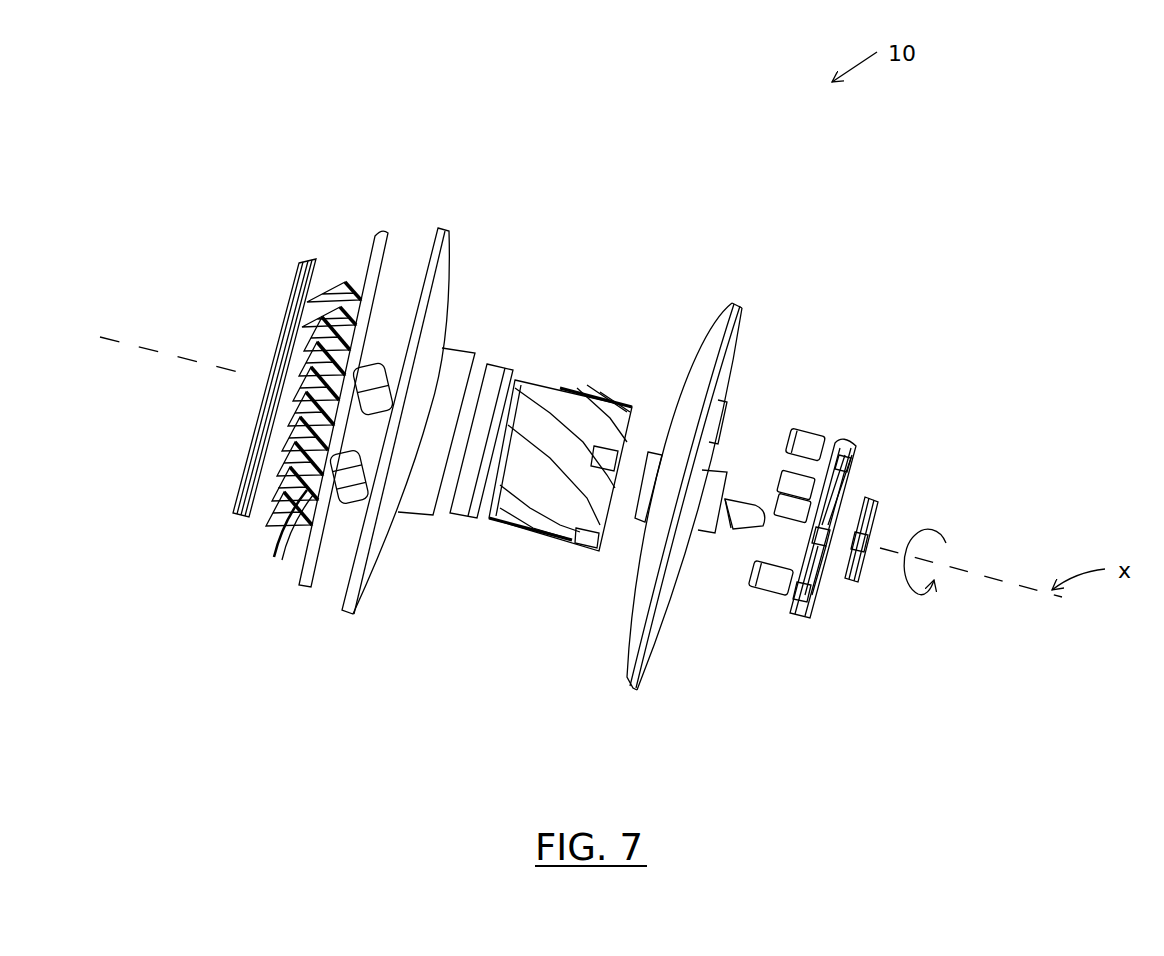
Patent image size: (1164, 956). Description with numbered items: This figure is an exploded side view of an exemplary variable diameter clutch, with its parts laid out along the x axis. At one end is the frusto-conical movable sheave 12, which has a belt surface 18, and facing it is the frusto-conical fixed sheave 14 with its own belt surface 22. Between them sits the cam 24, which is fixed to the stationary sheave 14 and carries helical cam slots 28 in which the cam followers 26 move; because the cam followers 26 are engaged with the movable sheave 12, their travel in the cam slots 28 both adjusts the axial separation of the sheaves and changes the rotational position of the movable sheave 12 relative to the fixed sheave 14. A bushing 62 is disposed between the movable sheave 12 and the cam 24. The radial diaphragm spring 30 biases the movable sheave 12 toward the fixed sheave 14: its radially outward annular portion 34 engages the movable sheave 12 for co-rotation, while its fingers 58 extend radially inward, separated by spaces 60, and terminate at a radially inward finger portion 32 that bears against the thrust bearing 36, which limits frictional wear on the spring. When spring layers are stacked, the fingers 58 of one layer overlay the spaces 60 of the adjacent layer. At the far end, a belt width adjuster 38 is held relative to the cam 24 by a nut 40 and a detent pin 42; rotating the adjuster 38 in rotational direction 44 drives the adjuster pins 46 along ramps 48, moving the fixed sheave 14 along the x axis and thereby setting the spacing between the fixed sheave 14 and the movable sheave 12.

The movable sheave 12 is at (457, 257).
The fixed sheave 14 is at (735, 300).
The belt surface 18 is at (447, 327).
The belt surface 22 is at (700, 356).
The cam 24 is at (521, 380).
The cam followers 26 is at (343, 507).
The cam slots 28 is at (623, 383).
The radial diaphragm spring 30 is at (390, 237).
The radially inward finger portion 32 is at (267, 503).
The annular portion 34 is at (299, 568).
The thrust bearing 36 is at (310, 260).
The belt width adjuster 38 is at (852, 434).
The nut 40 is at (855, 590).
The detent pin 42 is at (750, 492).
The rotational direction 44 is at (930, 528).
The adjuster pins 46 is at (775, 603).
The ramps 48 is at (823, 522).
The fingers 58 is at (283, 442).
The spaces 60 is at (300, 397).
The bushing 62 is at (449, 522).